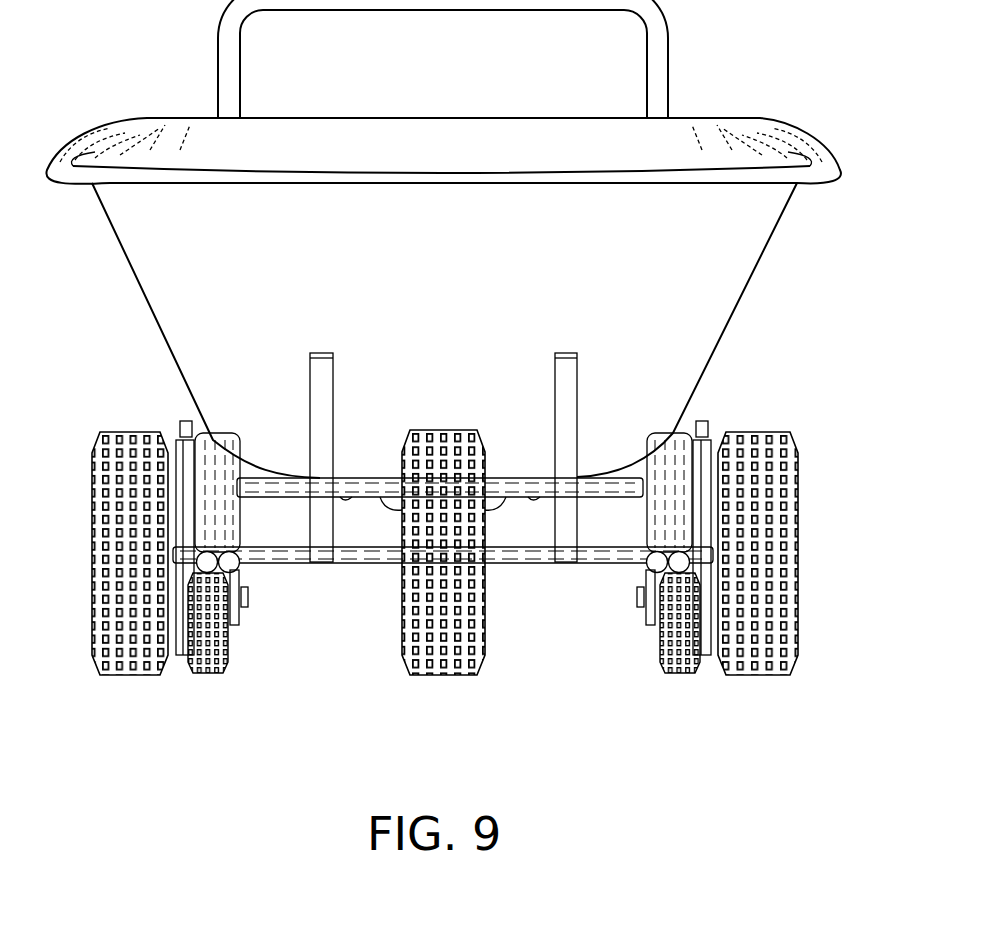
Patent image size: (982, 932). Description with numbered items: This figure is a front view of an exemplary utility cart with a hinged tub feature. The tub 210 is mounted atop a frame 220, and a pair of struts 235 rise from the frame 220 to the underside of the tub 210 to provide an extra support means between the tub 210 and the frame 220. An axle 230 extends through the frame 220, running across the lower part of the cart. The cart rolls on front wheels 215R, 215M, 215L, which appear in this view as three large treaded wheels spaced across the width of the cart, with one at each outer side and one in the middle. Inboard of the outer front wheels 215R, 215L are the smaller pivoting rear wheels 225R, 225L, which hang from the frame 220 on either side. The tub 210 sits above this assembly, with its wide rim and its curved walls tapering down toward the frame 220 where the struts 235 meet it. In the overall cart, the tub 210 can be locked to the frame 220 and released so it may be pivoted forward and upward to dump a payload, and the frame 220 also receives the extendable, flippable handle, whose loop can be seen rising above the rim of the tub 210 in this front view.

The tub 210 is at (552, 165).
The front wheel 215R is at (95, 657).
The front wheel 215M is at (482, 648).
The front wheel 215L is at (793, 652).
The frame 220 is at (663, 487).
The pivoting rear wheel 225R is at (233, 658).
The pivoting rear wheel 225L is at (653, 638).
The axle 230 is at (357, 565).
The strut 235 is at (310, 375).